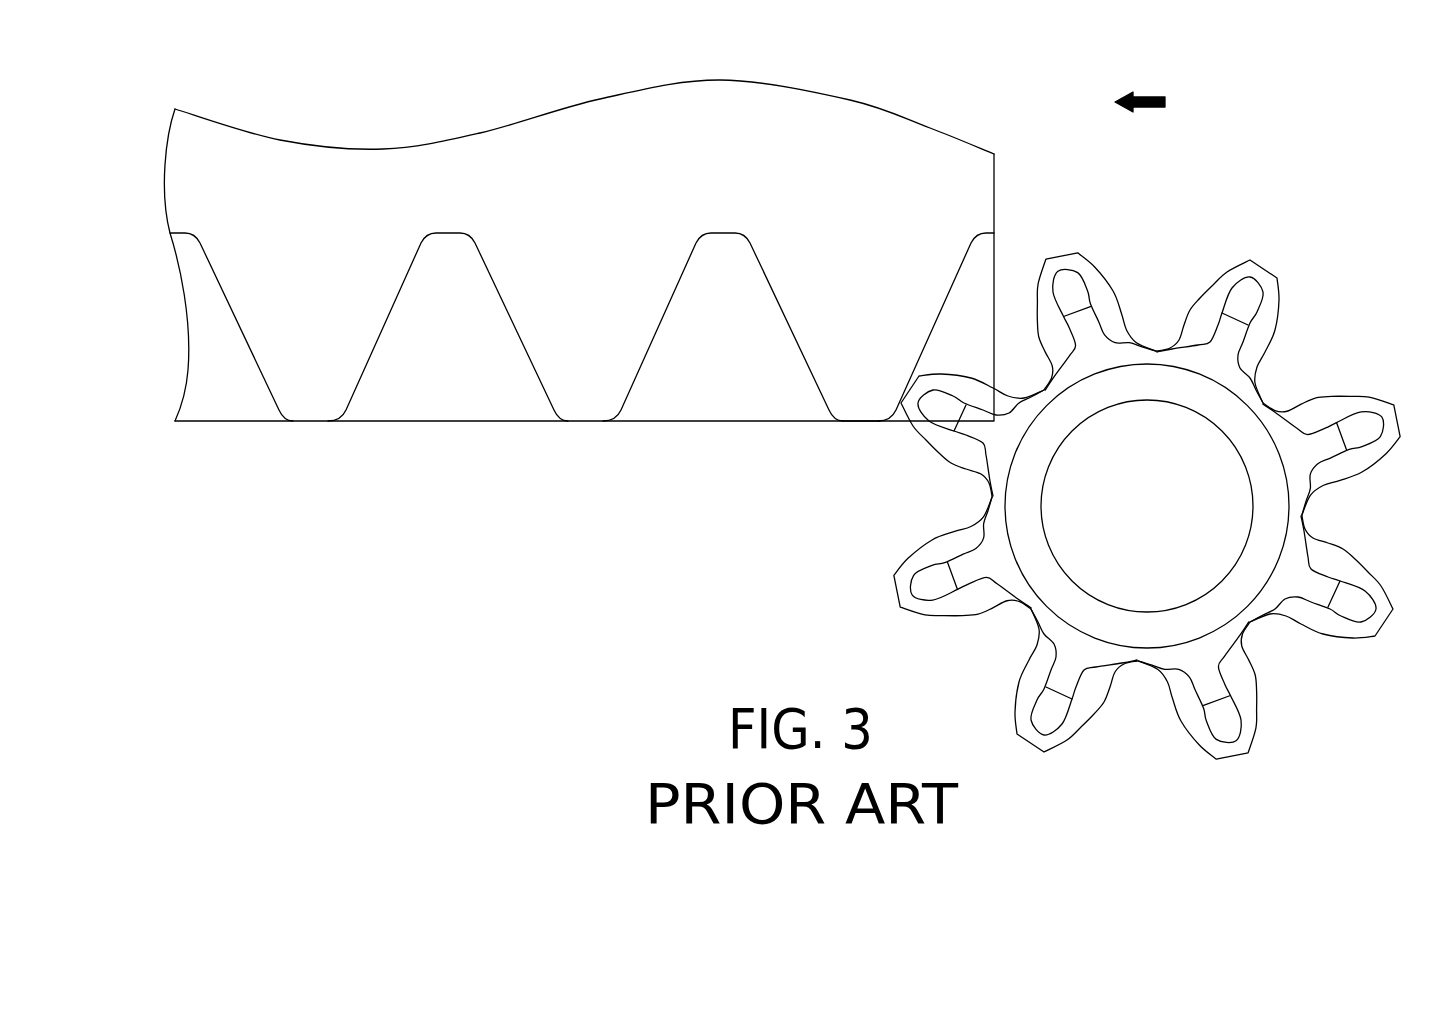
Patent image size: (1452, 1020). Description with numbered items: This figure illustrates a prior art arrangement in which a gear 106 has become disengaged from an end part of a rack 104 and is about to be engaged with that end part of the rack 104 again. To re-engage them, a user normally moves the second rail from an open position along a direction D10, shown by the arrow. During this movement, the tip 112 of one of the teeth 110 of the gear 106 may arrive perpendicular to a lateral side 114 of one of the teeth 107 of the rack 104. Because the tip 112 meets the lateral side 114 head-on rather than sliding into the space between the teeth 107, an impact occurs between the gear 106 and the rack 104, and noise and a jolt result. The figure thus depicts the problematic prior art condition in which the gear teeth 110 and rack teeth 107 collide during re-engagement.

The rack 104 is at (418, 148).
The gear 106 is at (1134, 510).
The teeth of the rack 107 is at (883, 350).
The teeth of the gear 110 is at (951, 437).
The tip 112 is at (920, 432).
The lateral side 114 is at (958, 280).
The direction D10 is at (1166, 102).